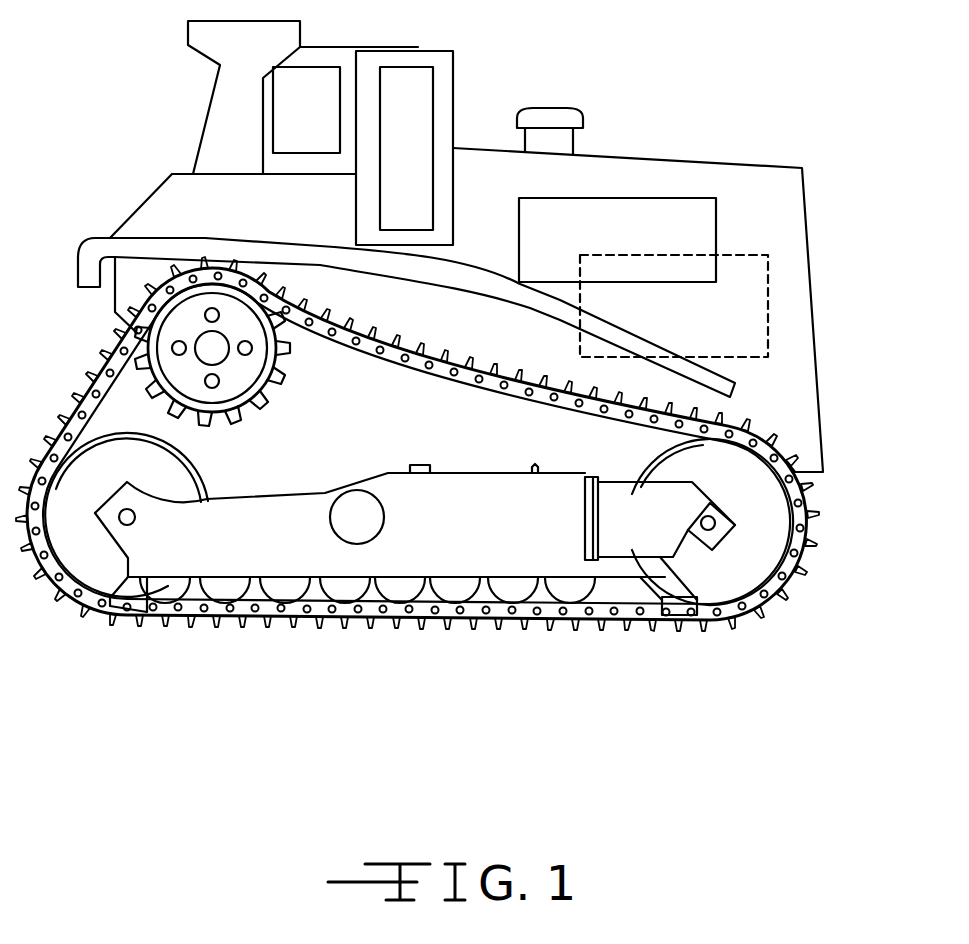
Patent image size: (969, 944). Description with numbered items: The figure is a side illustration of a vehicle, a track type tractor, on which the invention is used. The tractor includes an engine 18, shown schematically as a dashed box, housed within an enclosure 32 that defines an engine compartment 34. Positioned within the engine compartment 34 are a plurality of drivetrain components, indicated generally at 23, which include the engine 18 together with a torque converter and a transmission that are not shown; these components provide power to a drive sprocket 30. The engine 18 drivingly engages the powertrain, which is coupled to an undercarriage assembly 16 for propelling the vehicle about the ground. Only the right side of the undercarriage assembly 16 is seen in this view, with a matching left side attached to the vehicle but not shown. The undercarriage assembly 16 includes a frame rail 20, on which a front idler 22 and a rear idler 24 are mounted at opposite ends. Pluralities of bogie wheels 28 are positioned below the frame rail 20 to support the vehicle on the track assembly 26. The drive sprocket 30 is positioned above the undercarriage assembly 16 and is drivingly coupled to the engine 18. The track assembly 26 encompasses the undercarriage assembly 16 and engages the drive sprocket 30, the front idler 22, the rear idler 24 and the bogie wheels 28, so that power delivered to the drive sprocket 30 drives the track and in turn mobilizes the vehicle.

The undercarriage assembly 16 is at (520, 693).
The engine 18 is at (780, 284).
The frame rail 20 is at (461, 535).
The front idler 22 is at (721, 500).
The drivetrain components 23 is at (750, 378).
The rear idler 24 is at (116, 475).
The track assembly 26 is at (803, 527).
The bogie wheels 28 is at (333, 592).
The drive sprocket 30 is at (245, 378).
The enclosure 32 is at (788, 167).
The engine compartment 34 is at (757, 215).